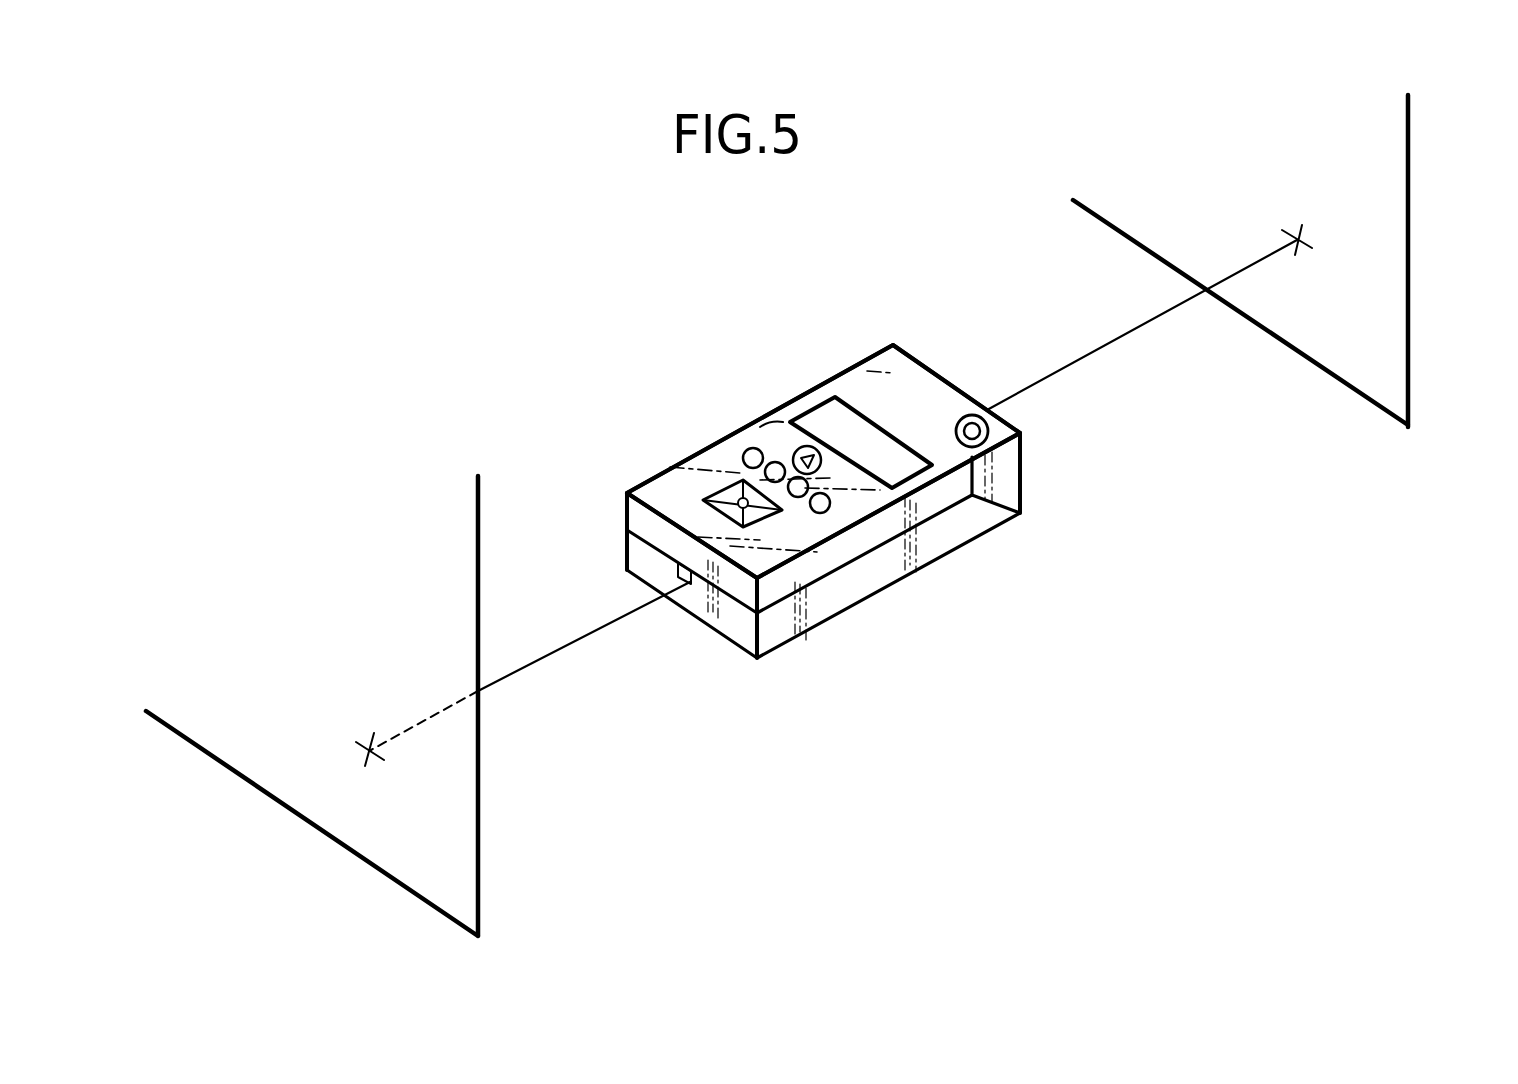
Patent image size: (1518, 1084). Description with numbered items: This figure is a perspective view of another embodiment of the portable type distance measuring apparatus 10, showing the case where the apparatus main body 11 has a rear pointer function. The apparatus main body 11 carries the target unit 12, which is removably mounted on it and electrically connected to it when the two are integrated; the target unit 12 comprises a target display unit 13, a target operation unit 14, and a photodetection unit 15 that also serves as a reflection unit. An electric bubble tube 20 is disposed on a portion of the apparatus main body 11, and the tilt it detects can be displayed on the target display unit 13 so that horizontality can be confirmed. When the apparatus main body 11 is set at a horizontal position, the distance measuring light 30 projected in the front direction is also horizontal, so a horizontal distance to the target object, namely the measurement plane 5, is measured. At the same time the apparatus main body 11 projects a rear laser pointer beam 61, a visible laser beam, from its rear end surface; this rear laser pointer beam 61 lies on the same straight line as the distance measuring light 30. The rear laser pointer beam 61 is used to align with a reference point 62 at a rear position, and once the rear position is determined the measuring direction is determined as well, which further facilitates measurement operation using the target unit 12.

The measurement plane 5 is at (1402, 317).
The portable type distance measuring apparatus 10 is at (918, 322).
The apparatus main body 11 is at (998, 527).
The target unit 12 is at (683, 457).
The target display unit 13 is at (810, 413).
The target operation unit 14 is at (736, 452).
The photodetection unit 15 is at (765, 518).
The electric bubble tube 20 is at (988, 437).
The distance measuring light 30 is at (1062, 367).
The rear laser pointer beam 61 is at (570, 642).
The reference point 62 is at (373, 762).